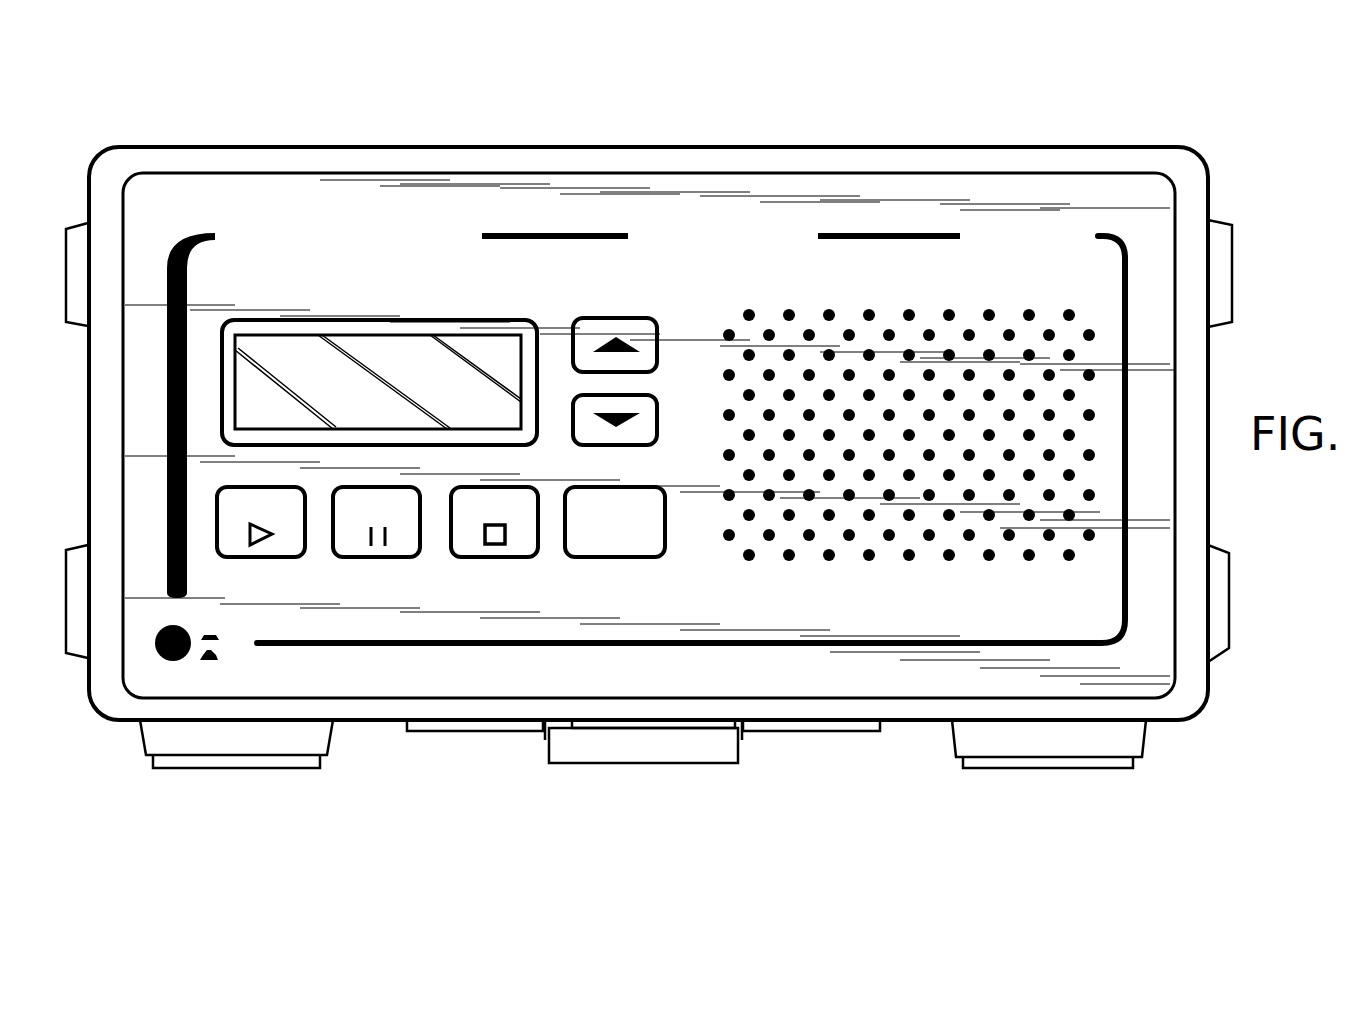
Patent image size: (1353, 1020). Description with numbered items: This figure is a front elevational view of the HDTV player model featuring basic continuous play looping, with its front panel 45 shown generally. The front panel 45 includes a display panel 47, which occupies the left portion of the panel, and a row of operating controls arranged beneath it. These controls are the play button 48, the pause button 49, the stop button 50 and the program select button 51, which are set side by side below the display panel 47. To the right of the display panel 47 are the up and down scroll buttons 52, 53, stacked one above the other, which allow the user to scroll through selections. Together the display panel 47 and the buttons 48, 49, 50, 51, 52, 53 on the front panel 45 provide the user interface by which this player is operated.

The front panel 45 is at (886, 130).
The display panel 47 is at (526, 313).
The play button 48 is at (268, 558).
The pause button 49 is at (388, 558).
The stop button 50 is at (500, 558).
The program select button 51 is at (630, 558).
The up scroll button 52 is at (660, 421).
The down scroll button 53 is at (660, 333).